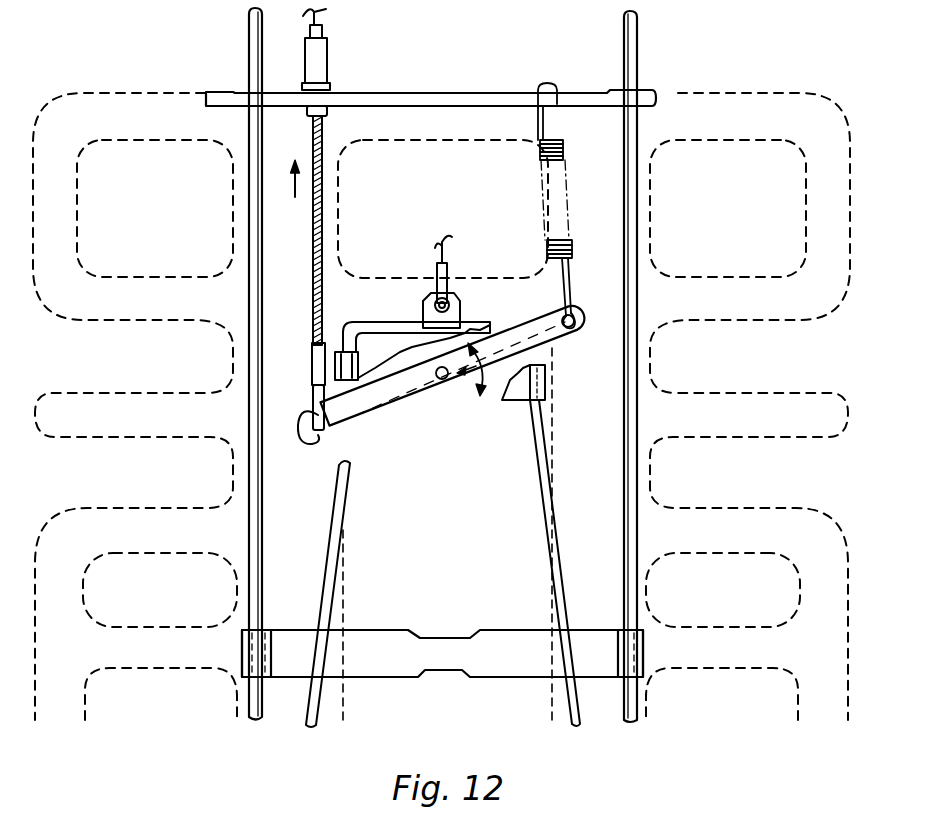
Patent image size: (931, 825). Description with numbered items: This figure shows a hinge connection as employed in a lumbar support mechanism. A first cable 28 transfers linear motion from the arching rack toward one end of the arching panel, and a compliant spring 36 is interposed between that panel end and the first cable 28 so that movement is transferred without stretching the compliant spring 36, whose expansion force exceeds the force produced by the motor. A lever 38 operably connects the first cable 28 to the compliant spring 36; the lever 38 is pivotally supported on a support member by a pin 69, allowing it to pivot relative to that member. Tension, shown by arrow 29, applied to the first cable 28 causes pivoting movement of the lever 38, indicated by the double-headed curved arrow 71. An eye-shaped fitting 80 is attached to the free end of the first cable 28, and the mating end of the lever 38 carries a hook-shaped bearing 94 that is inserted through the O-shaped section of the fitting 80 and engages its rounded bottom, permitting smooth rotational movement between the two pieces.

The tension arrow 29 is at (290, 194).
The first cable 28 is at (325, 192).
The compliant spring 36 is at (538, 150).
The lever 38 is at (523, 317).
The fitting 80 is at (312, 383).
The bearing 94 is at (298, 432).
The pin 69 is at (441, 380).
The pivoting movement arrow 71 is at (470, 373).